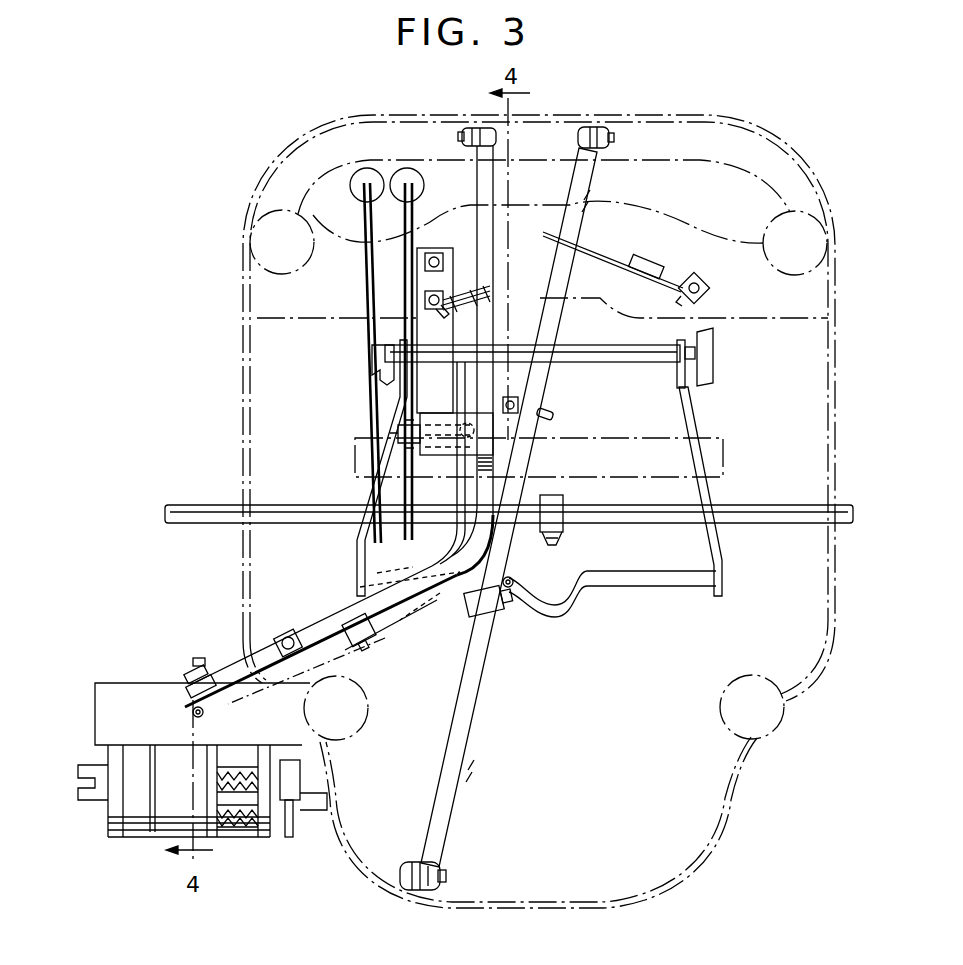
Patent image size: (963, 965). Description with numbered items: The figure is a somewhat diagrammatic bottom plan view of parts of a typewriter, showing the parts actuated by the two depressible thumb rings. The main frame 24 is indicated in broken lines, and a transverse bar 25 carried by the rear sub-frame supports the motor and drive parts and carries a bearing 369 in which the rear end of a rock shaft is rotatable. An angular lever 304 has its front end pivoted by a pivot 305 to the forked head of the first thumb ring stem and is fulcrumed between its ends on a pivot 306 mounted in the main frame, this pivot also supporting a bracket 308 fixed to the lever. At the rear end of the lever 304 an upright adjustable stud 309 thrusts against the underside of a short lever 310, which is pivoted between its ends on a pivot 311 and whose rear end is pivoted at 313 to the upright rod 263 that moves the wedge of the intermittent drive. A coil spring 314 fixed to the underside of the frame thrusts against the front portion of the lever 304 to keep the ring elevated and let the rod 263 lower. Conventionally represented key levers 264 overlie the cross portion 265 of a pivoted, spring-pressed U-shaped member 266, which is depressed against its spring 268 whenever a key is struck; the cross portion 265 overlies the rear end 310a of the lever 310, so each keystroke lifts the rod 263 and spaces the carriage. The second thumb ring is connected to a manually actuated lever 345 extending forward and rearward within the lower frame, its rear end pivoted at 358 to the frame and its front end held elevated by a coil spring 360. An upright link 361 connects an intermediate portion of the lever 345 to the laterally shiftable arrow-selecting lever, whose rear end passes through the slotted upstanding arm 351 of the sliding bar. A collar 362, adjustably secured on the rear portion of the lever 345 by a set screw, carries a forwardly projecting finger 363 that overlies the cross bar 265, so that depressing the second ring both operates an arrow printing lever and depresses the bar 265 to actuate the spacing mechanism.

The main frame 24 is at (594, 908).
The transverse bar 25 is at (122, 690).
The upright rod 263 is at (184, 702).
The key levers 264 is at (404, 268).
The cross portion 265 is at (664, 580).
The U-shaped member 266 is at (370, 493).
The spring 268 is at (514, 581).
The lever 304 is at (478, 186).
The pivot 305 is at (470, 132).
The pivot 306 is at (405, 435).
The bracket 308 is at (485, 441).
The adjustable stud 309 is at (288, 632).
The short lever 310 is at (235, 660).
The rear end of lever 310a is at (337, 671).
The pivot 311 is at (362, 648).
The pivot 313 is at (206, 712).
The coil spring 314 is at (462, 292).
The manually actuated lever 345 is at (462, 727).
The upstanding arm 351 is at (566, 496).
The pivot 358 is at (447, 873).
The coil spring 360 is at (654, 263).
The upright link 361 is at (549, 410).
The collar 362 is at (494, 616).
The finger 363 is at (385, 605).
The bearing 369 is at (607, 138).